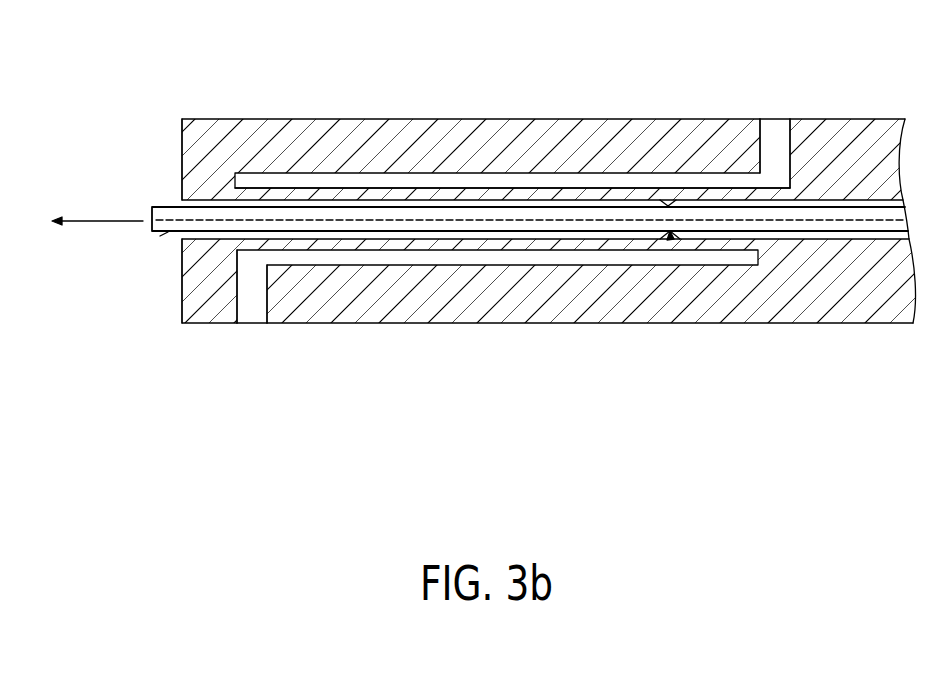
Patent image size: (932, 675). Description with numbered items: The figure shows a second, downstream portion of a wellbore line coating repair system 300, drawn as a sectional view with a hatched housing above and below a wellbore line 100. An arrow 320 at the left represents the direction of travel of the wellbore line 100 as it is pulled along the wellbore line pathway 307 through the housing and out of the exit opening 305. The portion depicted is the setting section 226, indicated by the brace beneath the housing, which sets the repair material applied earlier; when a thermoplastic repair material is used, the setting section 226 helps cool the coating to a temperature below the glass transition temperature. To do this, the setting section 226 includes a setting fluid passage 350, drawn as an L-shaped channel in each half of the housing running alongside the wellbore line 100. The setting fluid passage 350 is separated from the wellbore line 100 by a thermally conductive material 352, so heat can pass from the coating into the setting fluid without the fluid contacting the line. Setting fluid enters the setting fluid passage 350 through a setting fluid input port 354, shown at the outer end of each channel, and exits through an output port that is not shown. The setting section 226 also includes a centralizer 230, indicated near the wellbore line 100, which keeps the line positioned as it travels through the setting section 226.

The wellbore line coating repair system 300 is at (86, 90).
The arrow 320 is at (84, 220).
The wellbore line 100 is at (162, 206).
The exit opening 305 is at (163, 238).
The setting fluid passage 350 is at (272, 180).
The thermally conductive material 352 is at (447, 187).
The wellbore line pathway 307 is at (533, 119).
The centralizer 230 is at (670, 197).
The setting fluid input port 354 is at (776, 128).
The setting section 226 is at (466, 246).